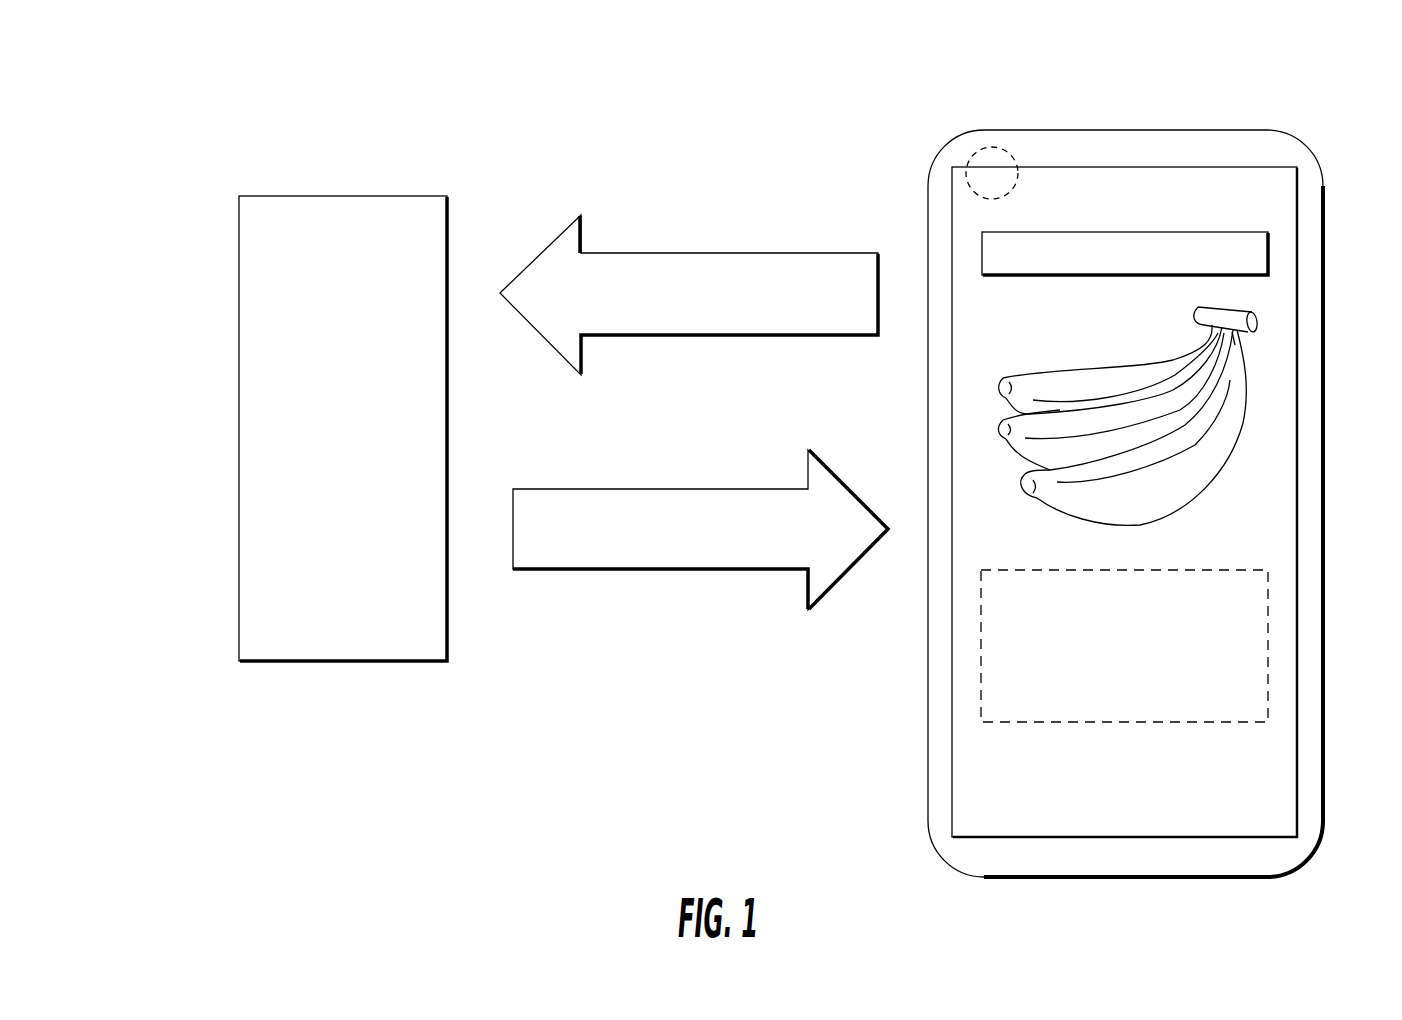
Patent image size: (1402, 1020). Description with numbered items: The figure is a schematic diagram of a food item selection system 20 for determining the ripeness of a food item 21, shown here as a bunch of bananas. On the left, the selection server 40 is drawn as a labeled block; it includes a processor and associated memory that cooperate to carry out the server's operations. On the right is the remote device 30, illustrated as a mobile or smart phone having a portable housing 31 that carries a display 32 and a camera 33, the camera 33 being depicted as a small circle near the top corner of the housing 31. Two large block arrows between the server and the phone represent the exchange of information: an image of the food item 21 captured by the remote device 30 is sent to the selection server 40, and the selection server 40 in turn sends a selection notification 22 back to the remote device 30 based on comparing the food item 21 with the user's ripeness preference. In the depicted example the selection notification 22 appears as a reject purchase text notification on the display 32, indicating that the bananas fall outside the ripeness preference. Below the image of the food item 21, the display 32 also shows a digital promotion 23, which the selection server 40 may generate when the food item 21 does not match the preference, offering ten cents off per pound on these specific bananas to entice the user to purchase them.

The food item selection system 20 is at (268, 106).
The selection server 40 is at (231, 316).
The remote device 30 is at (1218, 108).
The portable housing 31 is at (974, 130).
The camera 33 is at (1018, 158).
The display 32 is at (1280, 210).
The selection notification 22 is at (1270, 258).
The food item 21 is at (1230, 446).
The digital promotion 23 is at (1268, 656).